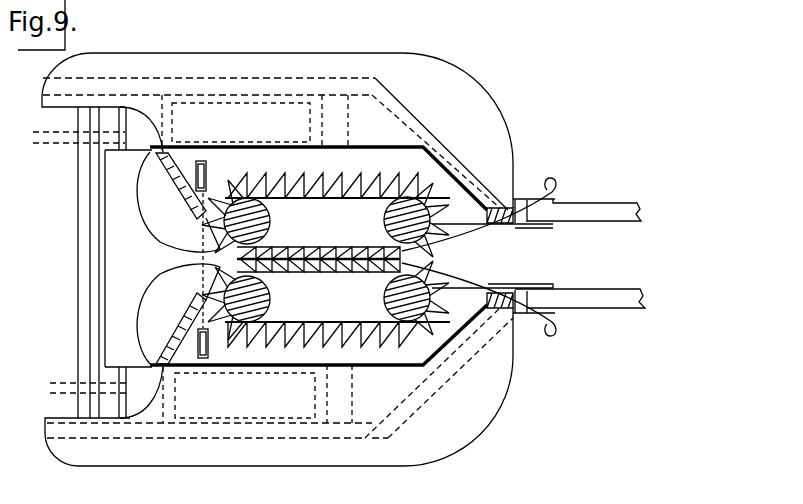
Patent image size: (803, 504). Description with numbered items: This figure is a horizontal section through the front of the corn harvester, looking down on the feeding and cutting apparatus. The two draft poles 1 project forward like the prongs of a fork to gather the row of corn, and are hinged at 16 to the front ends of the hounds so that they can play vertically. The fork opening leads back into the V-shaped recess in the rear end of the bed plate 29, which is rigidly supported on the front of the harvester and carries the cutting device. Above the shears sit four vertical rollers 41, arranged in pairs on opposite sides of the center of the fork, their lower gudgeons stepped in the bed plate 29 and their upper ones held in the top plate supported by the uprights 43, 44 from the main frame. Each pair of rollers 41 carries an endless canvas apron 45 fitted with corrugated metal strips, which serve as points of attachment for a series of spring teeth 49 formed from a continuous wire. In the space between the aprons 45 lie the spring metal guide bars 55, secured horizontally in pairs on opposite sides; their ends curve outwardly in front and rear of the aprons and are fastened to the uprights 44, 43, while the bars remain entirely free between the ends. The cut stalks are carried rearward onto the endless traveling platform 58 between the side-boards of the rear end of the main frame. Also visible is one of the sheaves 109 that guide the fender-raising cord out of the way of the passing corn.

The pole 1 is at (613, 200).
The hinge 16 is at (545, 285).
The bed plate 29 is at (277, 259).
The vertical rollers 41 is at (270, 221).
The upright 43 is at (505, 210).
The upright 44 is at (167, 183).
The endless canvas apron 45 is at (372, 197).
The spring teeth 49 is at (372, 190).
The spring metal guide bars 55 is at (480, 244).
The endless traveling platform 58 is at (97, 338).
The sheave 109 is at (208, 173).